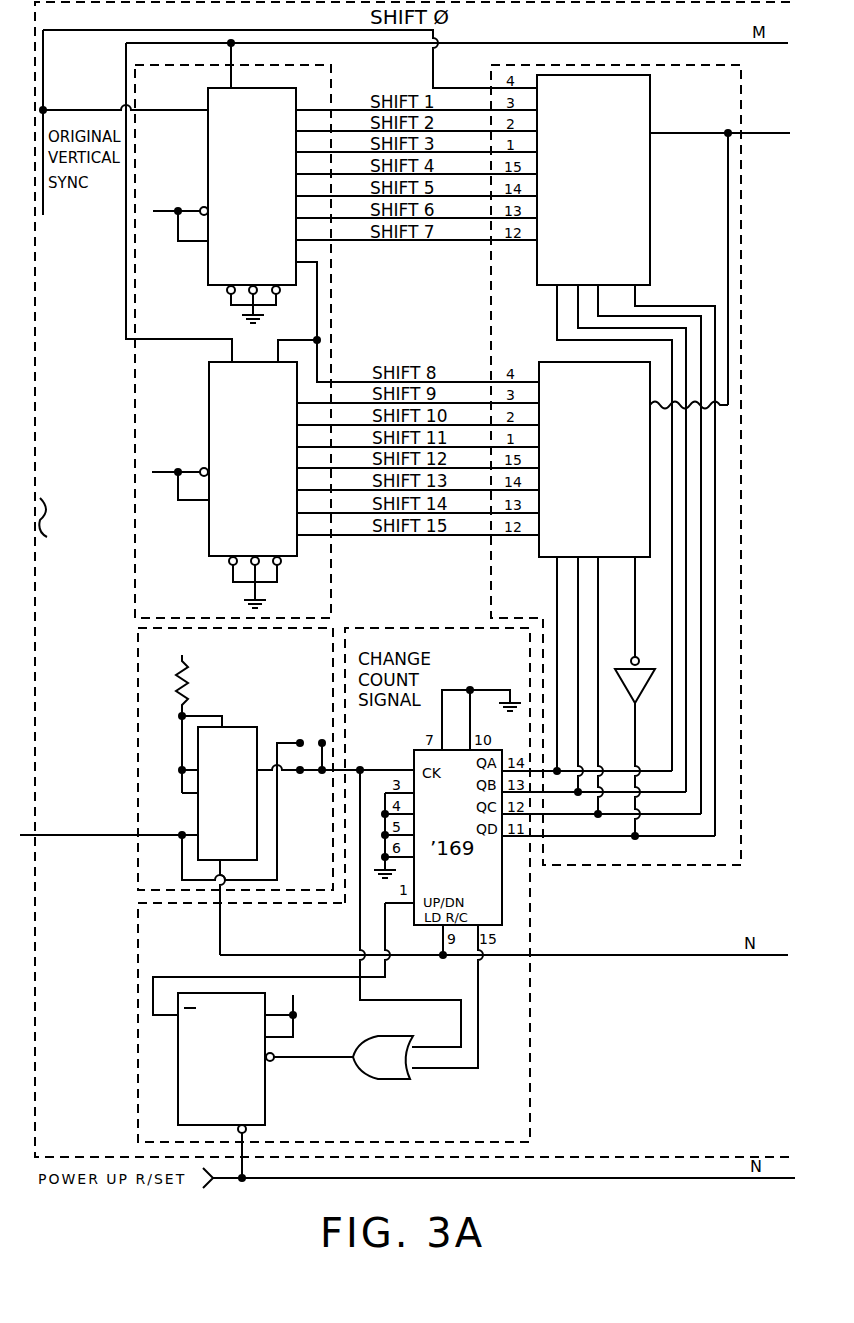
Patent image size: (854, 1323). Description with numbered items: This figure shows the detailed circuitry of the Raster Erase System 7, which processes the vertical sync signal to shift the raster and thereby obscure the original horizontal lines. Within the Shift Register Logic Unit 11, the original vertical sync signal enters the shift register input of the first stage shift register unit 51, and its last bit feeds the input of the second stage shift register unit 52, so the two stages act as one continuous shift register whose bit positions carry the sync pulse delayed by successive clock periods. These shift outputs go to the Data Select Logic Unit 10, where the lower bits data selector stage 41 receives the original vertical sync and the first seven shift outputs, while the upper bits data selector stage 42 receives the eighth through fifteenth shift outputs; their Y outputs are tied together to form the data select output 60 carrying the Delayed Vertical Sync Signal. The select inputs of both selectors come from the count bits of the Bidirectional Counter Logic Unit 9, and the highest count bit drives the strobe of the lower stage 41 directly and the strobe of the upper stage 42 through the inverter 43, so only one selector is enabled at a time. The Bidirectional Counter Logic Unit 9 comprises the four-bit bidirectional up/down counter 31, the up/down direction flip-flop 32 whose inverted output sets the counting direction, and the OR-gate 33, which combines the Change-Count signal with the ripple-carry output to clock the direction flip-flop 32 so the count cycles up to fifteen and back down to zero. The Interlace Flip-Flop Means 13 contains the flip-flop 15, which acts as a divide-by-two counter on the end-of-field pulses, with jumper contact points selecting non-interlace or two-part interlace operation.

The Raster Erase System 7 is at (37, 654).
The Bidirectional Counter Logic Unit 9 is at (355, 626).
The Data Select Logic Unit 10 is at (741, 236).
The Shift Register Logic Unit 11 is at (332, 306).
The Interlace Flip-Flop Means 13 is at (332, 674).
The flip-flop 15 is at (231, 727).
The four-bit bidirectional up/down counter 31 is at (420, 748).
The up/down direction flip-flop 32 is at (265, 1092).
The OR-gate 33 is at (380, 1081).
The lower bits '251 data selector stage 41 is at (650, 186).
The upper bits '251 data selector stage 42 is at (553, 362).
The inverter 43 is at (640, 690).
The first stage '299 shift register unit 51 is at (208, 166).
The second stage '299 shift register unit 52 is at (209, 420).
The data select output 60 is at (720, 261).